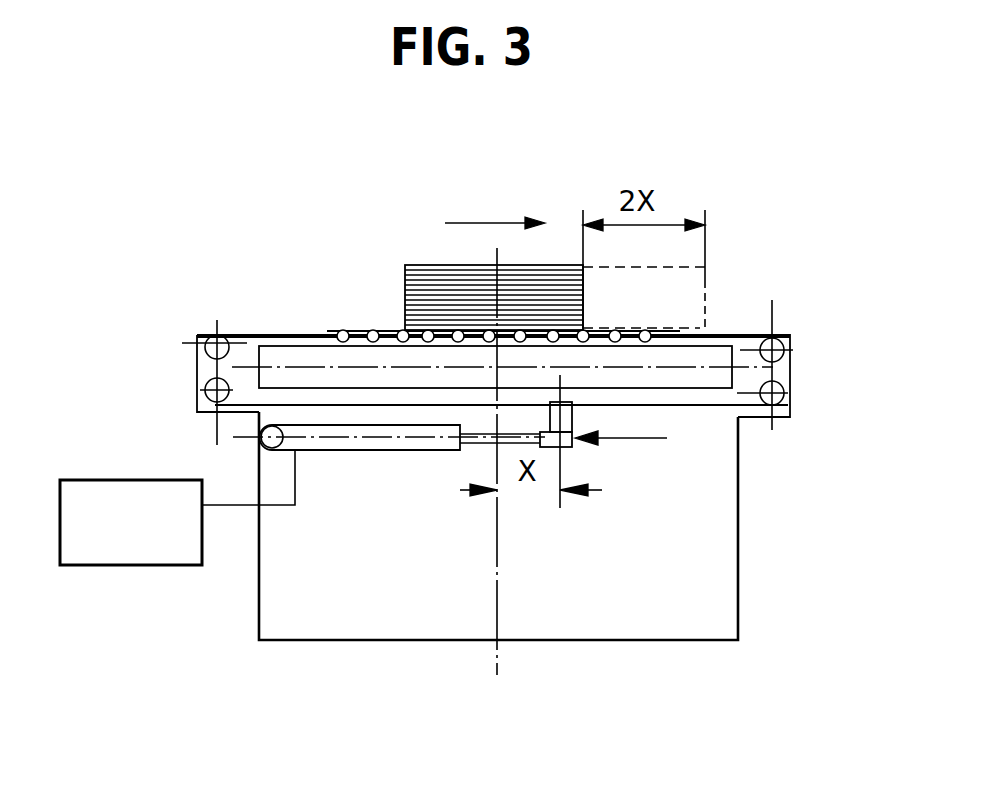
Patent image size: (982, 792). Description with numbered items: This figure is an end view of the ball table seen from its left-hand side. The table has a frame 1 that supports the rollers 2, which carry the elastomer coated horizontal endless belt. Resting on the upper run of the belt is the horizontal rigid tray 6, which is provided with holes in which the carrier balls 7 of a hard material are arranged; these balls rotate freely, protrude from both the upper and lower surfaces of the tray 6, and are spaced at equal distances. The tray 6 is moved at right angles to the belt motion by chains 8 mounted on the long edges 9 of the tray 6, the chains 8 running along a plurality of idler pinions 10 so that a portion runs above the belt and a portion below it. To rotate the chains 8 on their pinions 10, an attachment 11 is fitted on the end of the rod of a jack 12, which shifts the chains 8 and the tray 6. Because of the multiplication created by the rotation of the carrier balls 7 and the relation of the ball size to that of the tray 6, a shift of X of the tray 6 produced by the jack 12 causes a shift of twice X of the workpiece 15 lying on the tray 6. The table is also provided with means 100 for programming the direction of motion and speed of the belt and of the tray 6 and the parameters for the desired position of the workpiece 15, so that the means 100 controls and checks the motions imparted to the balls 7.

The frame 1 is at (288, 605).
The rollers 2 is at (270, 357).
The tray 6 is at (355, 332).
The carrier balls 7 is at (343, 330).
The chains 8 is at (733, 333).
The long edges 9 is at (327, 333).
The idler pinions 10 is at (203, 390).
The attachment 11 is at (573, 410).
The jack 12 is at (435, 445).
The workpiece 15 is at (432, 303).
The means 100 is at (177, 507).